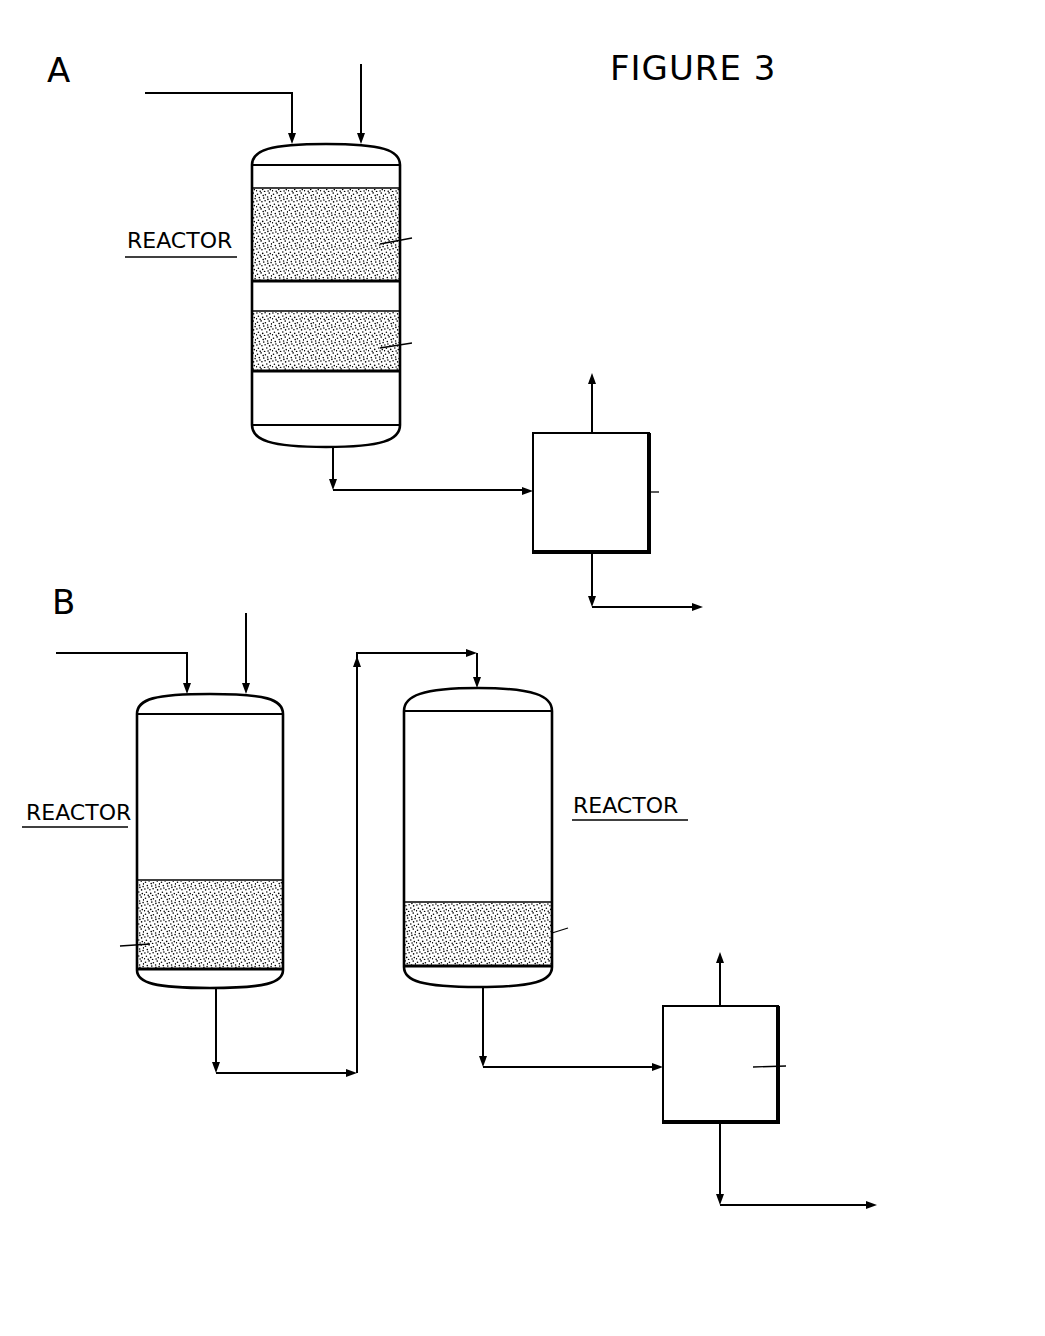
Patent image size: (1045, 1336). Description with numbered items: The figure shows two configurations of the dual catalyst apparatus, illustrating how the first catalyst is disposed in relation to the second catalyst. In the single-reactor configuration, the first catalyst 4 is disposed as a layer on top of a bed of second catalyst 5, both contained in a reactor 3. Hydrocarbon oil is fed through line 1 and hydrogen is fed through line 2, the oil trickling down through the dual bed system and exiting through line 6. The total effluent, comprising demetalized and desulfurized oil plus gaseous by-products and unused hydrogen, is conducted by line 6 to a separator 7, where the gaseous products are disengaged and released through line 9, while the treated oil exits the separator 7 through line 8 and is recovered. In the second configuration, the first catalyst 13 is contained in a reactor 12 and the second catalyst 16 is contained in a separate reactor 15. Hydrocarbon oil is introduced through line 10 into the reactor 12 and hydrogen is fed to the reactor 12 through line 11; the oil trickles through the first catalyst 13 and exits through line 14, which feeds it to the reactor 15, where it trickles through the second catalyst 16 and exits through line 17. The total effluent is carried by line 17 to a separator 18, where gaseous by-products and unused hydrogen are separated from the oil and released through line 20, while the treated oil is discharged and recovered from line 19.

The hydrocarbon oil feed line 1 is at (195, 92).
The hydrogen feed line 2 is at (363, 90).
The reactor 3 is at (252, 286).
The first catalyst 4 is at (400, 258).
The second catalyst 5 is at (400, 362).
The effluent line 6 is at (433, 493).
The separator 7 is at (600, 507).
The treated oil line 8 is at (663, 608).
The gas release line 9 is at (591, 403).
The hydrocarbon oil feed line 10 is at (128, 652).
The hydrogen feed line 11 is at (248, 652).
The reactor 12 is at (137, 845).
The first catalyst 13 is at (268, 921).
The transfer line 14 is at (287, 1076).
The reactor 15 is at (552, 851).
The second catalyst 16 is at (537, 949).
The effluent line 17 is at (545, 1069).
The separator 18 is at (733, 1071).
The treated oil line 19 is at (787, 1210).
The gas release line 20 is at (722, 981).